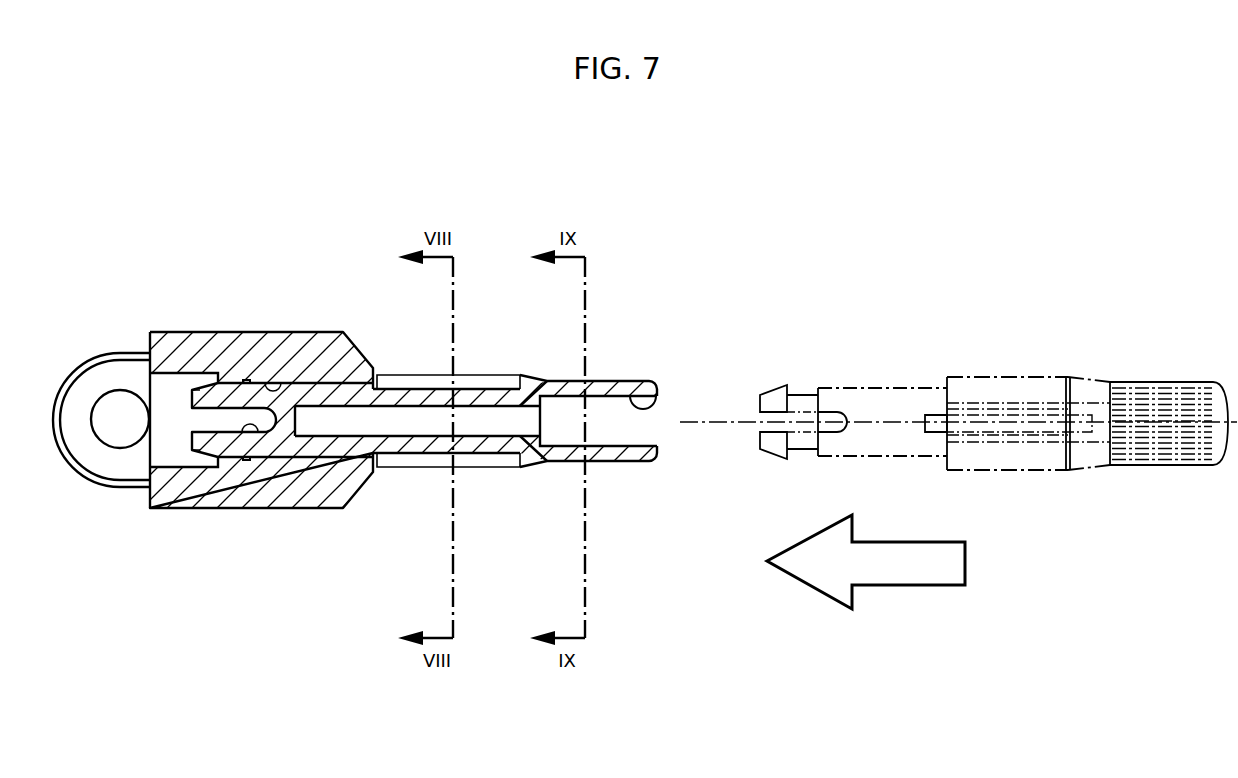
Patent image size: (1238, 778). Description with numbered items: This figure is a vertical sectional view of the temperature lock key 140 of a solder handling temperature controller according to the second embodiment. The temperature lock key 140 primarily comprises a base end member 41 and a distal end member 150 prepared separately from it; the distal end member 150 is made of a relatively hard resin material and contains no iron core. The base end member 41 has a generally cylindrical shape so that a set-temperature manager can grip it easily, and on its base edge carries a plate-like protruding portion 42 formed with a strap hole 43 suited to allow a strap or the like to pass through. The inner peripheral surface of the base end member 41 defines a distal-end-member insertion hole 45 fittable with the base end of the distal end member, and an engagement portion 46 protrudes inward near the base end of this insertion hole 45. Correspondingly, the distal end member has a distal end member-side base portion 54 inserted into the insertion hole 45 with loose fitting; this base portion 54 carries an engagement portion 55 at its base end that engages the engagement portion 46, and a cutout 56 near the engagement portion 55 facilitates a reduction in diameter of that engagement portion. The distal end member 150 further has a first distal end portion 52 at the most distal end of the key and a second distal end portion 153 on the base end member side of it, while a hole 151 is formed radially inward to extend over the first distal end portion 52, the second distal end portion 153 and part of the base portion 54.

The temperature lock key 140 is at (243, 296).
The base end member 41 is at (172, 332).
The protruding portion 42 is at (80, 362).
The strap hole 43 is at (93, 449).
The distal-end-member insertion hole 45 is at (287, 383).
The engagement portion 46 is at (203, 460).
The distal end member-side base portion 54 is at (313, 460).
The engagement portion 55 is at (193, 452).
The cutout 56 is at (263, 448).
The first distal end portion 52 is at (611, 381).
The hole 151 is at (660, 405).
The second distal end portion 153 is at (485, 375).
The distal end member 150 is at (670, 302).